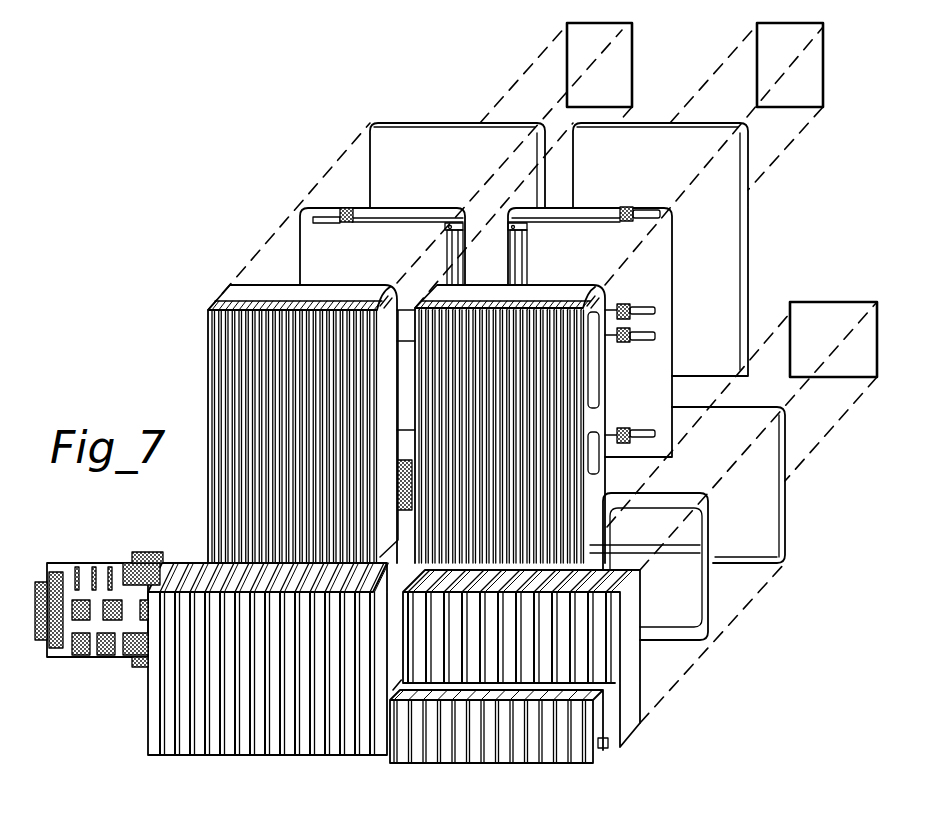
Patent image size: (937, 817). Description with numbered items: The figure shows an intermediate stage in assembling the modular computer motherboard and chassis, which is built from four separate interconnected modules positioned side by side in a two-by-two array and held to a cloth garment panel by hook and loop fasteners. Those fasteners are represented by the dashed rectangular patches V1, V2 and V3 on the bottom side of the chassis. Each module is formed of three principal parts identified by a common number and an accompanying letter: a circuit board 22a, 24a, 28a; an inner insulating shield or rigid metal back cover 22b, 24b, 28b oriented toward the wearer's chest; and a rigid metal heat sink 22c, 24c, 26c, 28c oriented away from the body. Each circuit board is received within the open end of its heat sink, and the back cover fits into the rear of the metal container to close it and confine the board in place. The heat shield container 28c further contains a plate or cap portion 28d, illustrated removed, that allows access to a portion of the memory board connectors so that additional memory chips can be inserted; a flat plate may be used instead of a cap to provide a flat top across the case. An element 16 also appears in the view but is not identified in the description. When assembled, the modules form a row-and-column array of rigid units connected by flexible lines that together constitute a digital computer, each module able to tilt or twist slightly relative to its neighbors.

The hook and loop fastener patch V1 is at (808, 66).
The hook and loop fastener patch V2 is at (618, 58).
The hook and loop fastener patch V3 is at (833, 318).
The electrical connector 16 is at (110, 655).
The circuit board 22a is at (393, 267).
The rigid metal back cover 22b is at (470, 169).
The rigid metal heat sink 22c is at (208, 402).
The circuit board 24a is at (607, 267).
The rigid metal back cover 24b is at (667, 169).
The rigid metal heat sink 24c is at (607, 407).
The rigid metal heat sink 26c is at (273, 748).
The circuit board 28a is at (713, 641).
The inner insulating shield 28b is at (779, 527).
The heat shield container 28c is at (618, 749).
The plate or cap portion 28d is at (521, 758).